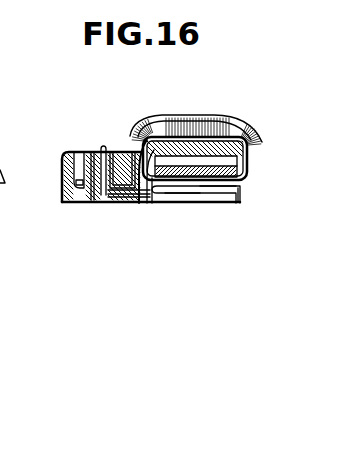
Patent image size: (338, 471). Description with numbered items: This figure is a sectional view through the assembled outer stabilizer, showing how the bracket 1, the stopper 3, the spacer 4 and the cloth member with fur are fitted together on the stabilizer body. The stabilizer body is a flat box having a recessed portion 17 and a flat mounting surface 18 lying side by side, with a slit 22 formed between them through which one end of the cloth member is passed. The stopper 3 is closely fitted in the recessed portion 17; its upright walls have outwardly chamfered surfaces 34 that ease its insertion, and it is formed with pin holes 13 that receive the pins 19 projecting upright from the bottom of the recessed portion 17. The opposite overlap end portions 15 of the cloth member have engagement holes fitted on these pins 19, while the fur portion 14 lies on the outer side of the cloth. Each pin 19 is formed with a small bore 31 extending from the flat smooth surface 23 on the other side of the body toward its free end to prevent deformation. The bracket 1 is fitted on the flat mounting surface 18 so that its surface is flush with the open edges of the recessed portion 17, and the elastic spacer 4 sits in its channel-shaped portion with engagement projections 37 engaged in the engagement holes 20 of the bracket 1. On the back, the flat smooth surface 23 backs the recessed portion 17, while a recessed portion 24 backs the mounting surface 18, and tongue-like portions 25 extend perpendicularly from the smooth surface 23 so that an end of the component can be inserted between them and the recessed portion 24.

The bracket 1 is at (215, 145).
The stopper 3 is at (125, 157).
The spacer 4 is at (246, 161).
The pin holes 13 is at (96, 152).
The fur portion 14 is at (262, 133).
The overlap end portions 15 is at (70, 203).
The recessed portion 17 is at (63, 161).
The flat mounting surface 18 is at (244, 165).
The pins 19 is at (103, 150).
The engagement holes 20 is at (210, 190).
The slit 22 is at (153, 206).
The flat smooth surface 23 is at (106, 216).
The recessed portion 24 is at (243, 196).
The tongue-like portions 25 is at (222, 203).
The small bores 31 is at (90, 215).
The chamfered surfaces 34 is at (70, 178).
The engagement projections 37 is at (185, 190).